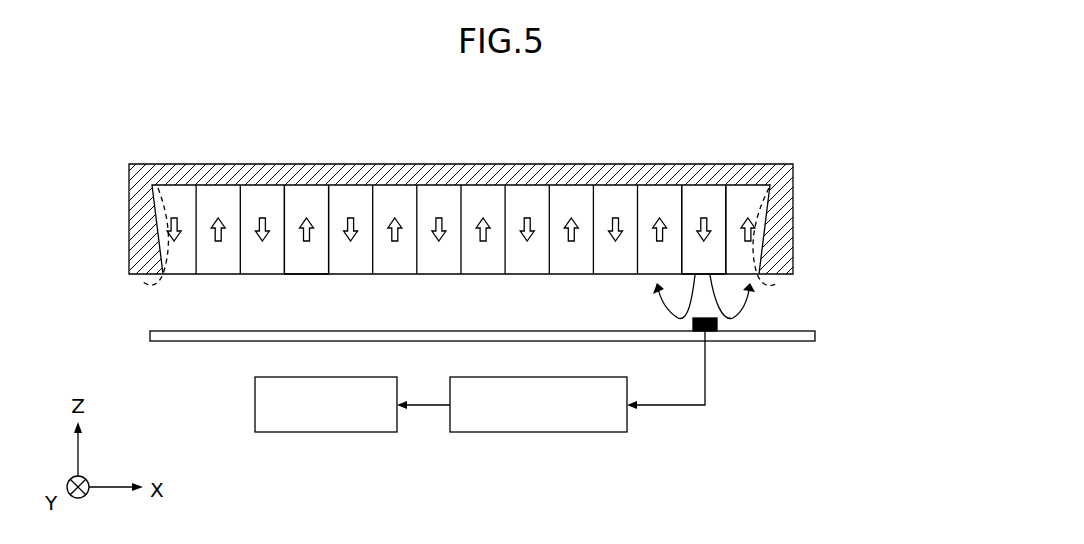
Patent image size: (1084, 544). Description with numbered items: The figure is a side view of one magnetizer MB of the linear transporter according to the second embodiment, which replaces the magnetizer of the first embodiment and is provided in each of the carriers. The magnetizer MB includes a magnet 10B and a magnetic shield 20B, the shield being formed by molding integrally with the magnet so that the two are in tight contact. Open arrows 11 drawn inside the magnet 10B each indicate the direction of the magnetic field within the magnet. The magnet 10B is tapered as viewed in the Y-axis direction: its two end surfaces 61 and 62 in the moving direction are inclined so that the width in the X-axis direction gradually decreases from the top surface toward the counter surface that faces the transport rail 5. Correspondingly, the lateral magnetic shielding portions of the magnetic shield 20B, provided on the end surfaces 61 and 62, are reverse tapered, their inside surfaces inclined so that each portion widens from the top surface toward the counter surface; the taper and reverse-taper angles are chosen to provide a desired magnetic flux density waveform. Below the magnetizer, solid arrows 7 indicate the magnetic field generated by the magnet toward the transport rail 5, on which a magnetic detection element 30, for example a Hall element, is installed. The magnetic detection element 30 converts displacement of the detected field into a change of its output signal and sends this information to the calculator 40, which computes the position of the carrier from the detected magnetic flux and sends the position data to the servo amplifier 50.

The magnetizer MB is at (505, 191).
The magnetic shield 20B is at (578, 165).
The magnet 10B is at (308, 196).
The open arrows 11 is at (710, 206).
The end surface 61 is at (135, 224).
The end surface 62 is at (793, 222).
The transport rail 5 is at (827, 320).
The solid arrows 7 is at (748, 293).
The magnetic detection element 30 is at (718, 324).
The calculator 40 is at (601, 377).
The servo amplifier 50 is at (334, 377).